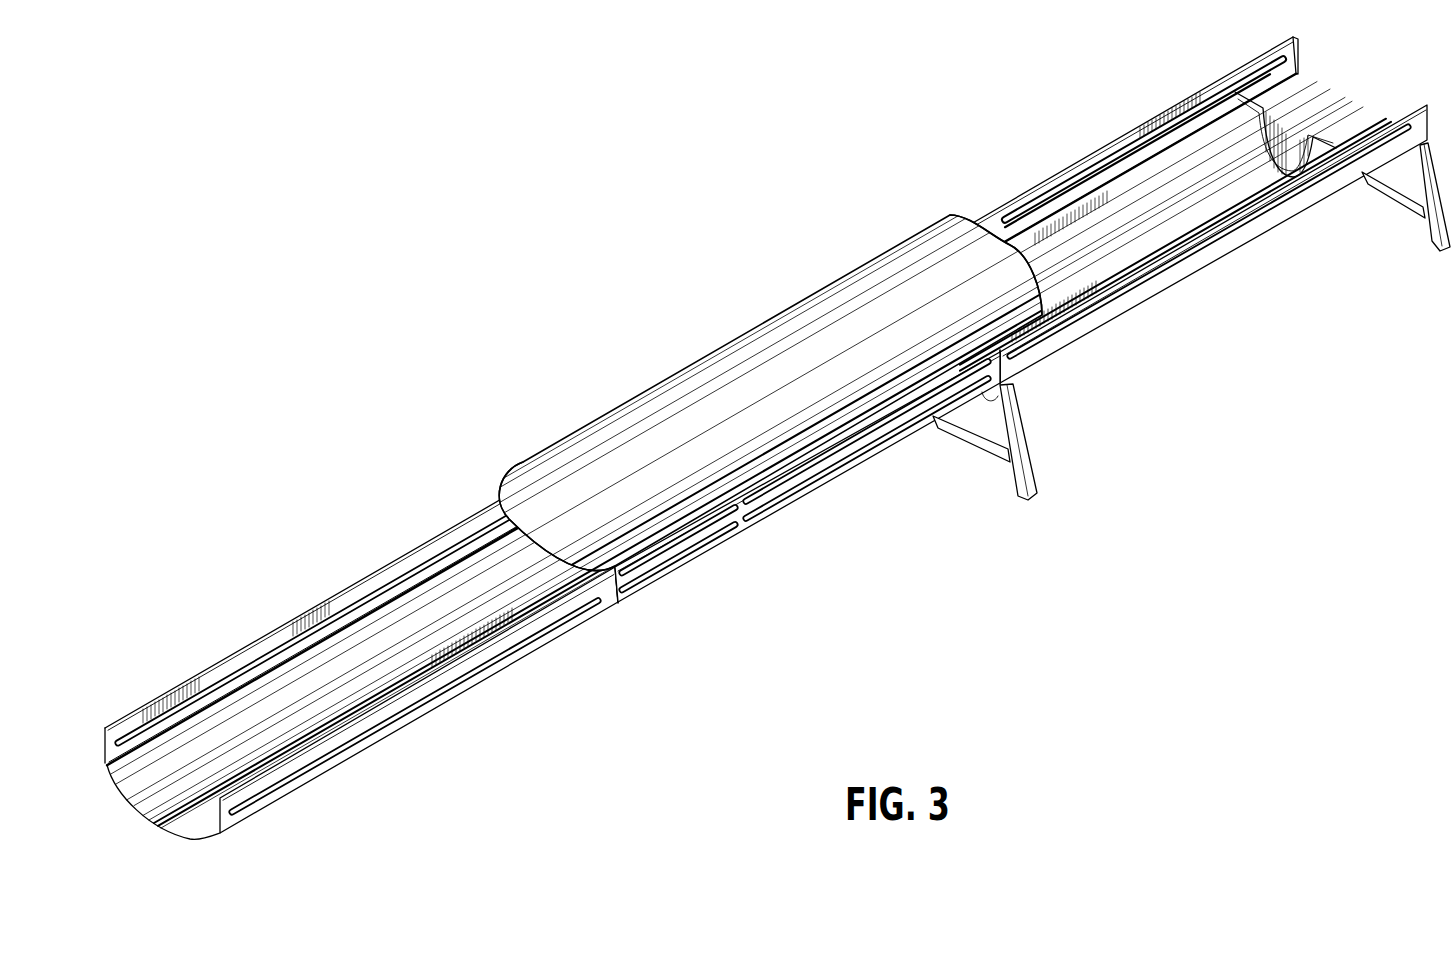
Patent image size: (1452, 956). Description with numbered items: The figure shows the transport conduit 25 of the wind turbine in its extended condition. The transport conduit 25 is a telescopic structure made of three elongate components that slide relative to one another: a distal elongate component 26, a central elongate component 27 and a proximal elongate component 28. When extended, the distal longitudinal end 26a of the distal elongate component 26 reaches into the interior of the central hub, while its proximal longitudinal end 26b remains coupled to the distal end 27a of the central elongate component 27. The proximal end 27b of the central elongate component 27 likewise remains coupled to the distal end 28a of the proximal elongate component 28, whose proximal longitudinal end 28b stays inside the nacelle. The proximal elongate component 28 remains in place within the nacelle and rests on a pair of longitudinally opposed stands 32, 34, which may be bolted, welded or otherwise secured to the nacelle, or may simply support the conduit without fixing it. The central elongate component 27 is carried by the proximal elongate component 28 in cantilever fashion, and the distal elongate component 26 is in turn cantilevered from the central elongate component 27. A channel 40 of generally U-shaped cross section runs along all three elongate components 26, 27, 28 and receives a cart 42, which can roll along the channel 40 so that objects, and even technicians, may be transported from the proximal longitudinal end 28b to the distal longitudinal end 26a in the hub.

The transport conduit 25 is at (774, 449).
The distal elongate component 26 is at (362, 677).
The distal longitudinal end of distal elongate component 26a is at (140, 824).
The proximal longitudinal end of distal elongate component 26b is at (570, 558).
The central elongate component 27 is at (743, 387).
The distal end of central elongate component 27a is at (497, 492).
The proximal end of central elongate component 27b is at (985, 213).
The proximal elongate component 28 is at (1191, 231).
The distal end of proximal elongate component 28a is at (1013, 408).
The proximal longitudinal end of proximal elongate component 28b is at (1337, 120).
The stand 32 is at (963, 440).
The stand 34 is at (1395, 200).
The U-shaped channel 40 is at (482, 612).
The cart 42 is at (1140, 165).